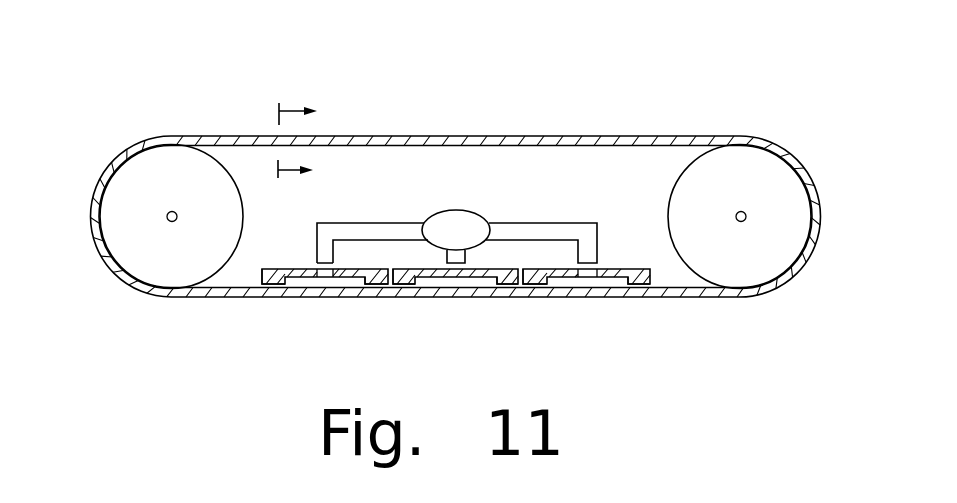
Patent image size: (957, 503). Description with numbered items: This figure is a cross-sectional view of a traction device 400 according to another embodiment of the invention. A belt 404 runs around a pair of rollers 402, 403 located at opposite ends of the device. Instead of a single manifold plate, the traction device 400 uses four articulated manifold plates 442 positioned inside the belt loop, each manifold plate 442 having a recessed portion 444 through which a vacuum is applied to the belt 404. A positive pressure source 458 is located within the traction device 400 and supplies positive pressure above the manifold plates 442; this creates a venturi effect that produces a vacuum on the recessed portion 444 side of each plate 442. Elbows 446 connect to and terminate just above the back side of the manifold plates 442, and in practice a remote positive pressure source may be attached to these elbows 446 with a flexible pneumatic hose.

The traction device 400 is at (191, 92).
The roller 402 is at (788, 200).
The roller 403 is at (112, 237).
The belt 404 is at (527, 137).
The manifold plate 442 is at (266, 286).
The recessed portion 444 is at (310, 280).
The elbow 446 is at (376, 228).
The positive pressure source 458 is at (458, 210).